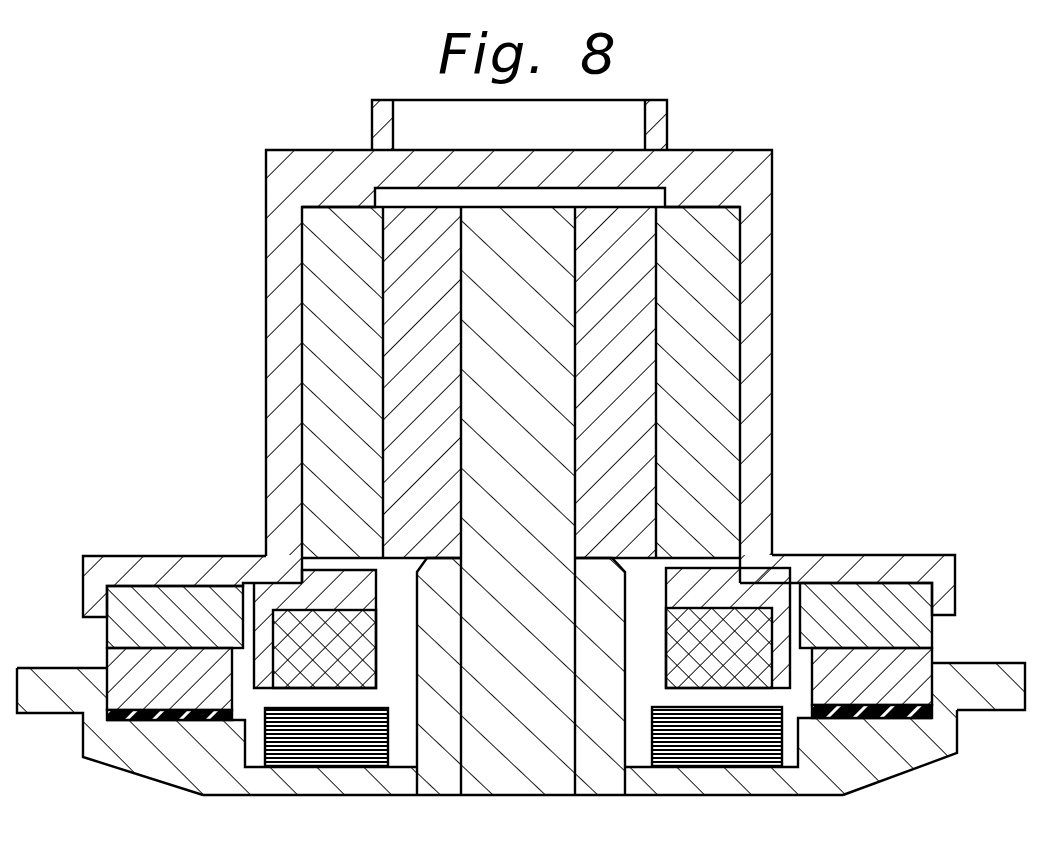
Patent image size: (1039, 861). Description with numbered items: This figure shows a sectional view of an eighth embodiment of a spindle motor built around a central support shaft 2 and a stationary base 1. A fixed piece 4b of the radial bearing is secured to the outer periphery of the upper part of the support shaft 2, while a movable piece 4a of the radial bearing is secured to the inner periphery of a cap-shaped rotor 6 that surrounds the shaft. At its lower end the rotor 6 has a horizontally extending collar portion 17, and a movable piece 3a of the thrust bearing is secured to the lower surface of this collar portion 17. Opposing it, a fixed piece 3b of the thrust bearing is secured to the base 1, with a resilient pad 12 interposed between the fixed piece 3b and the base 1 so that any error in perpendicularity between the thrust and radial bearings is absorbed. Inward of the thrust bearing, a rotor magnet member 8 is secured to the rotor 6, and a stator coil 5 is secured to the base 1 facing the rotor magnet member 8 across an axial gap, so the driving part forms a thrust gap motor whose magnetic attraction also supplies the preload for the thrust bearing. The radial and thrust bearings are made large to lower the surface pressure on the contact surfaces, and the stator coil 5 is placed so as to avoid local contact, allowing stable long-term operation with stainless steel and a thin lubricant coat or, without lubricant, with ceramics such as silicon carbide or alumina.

The base 1 is at (193, 762).
The support shaft 2 is at (545, 760).
The movable piece of thrust bearing 3a is at (162, 600).
The fixed piece of thrust bearing 3b is at (107, 716).
The movable piece of radial bearing 4a is at (717, 270).
The fixed piece of radial bearing 4b is at (655, 223).
The stator coil 5 is at (336, 742).
The rotor 6 is at (711, 165).
The rotor magnet member 8 is at (301, 619).
The resilient pad 12 is at (932, 712).
The collar portion 17 is at (93, 578).